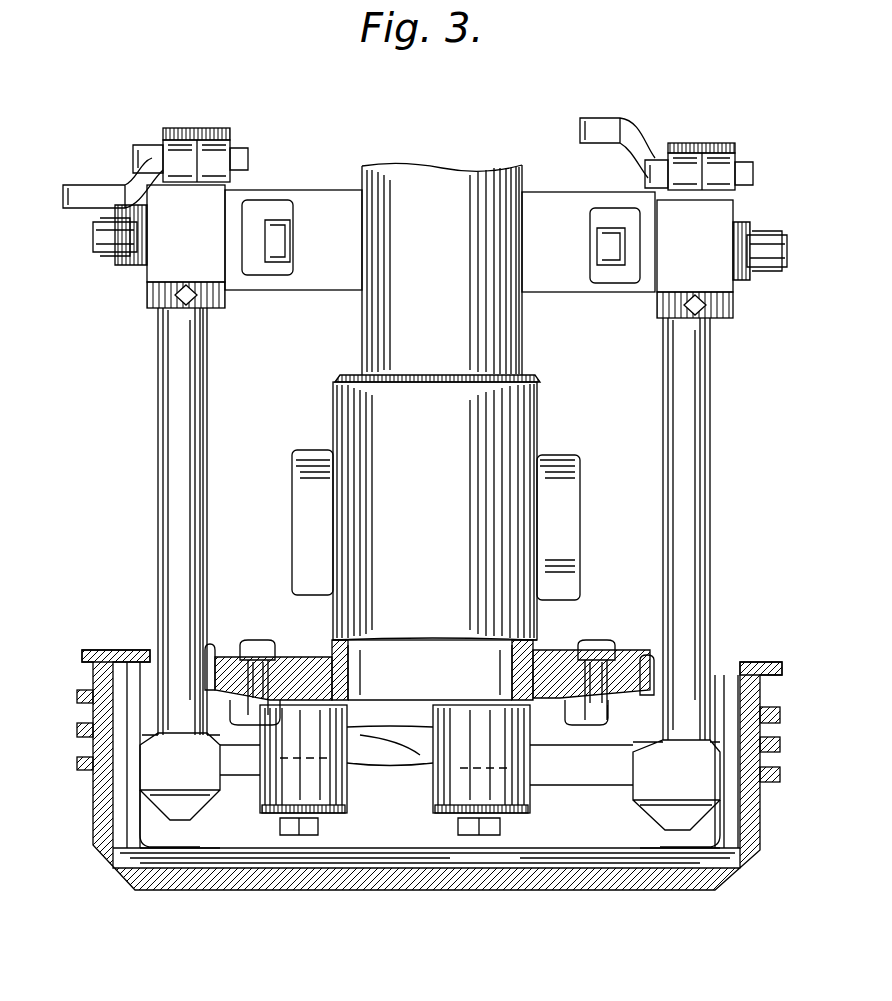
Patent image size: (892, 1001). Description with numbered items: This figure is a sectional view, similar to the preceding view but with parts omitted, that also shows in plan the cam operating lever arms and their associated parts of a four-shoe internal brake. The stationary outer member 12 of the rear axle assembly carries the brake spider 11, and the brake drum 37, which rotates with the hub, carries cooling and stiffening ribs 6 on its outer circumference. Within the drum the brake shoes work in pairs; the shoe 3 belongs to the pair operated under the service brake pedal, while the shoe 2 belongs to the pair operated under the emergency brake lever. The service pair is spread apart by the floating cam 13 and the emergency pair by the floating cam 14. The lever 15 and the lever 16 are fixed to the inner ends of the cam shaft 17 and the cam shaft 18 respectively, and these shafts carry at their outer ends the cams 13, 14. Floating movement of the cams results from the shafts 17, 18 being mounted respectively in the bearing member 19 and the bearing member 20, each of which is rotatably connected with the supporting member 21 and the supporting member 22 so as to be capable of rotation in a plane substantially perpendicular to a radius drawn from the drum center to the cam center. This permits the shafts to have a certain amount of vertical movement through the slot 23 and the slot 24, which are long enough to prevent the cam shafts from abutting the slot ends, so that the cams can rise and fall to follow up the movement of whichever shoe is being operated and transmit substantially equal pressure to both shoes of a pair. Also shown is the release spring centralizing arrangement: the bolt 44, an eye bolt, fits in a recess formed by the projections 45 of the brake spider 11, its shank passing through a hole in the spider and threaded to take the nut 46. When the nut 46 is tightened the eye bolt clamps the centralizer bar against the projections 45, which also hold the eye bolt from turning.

The brake shoe 2 is at (163, 843).
The brake shoe 3 is at (678, 838).
The cooling and stiffening ribs 6 is at (77, 760).
The brake spider 11 is at (300, 662).
The stationary outer member of the rear axle assembly 12 is at (335, 418).
The floating cam 13 is at (676, 785).
The floating cam 14 is at (180, 776).
The lever 15 is at (640, 135).
The lever 16 is at (150, 180).
The cam shaft 17 is at (708, 430).
The cam shaft 18 is at (172, 392).
The bearing member 19 is at (716, 230).
The bearing member 20 is at (170, 218).
The supporting member 21 is at (582, 200).
The supporting member 22 is at (268, 192).
The slot 23 is at (712, 660).
The slot 24 is at (152, 648).
The brake drum 37 is at (102, 828).
The bolt 44 is at (230, 708).
The projections 45 is at (225, 712).
The nut 46 is at (257, 640).